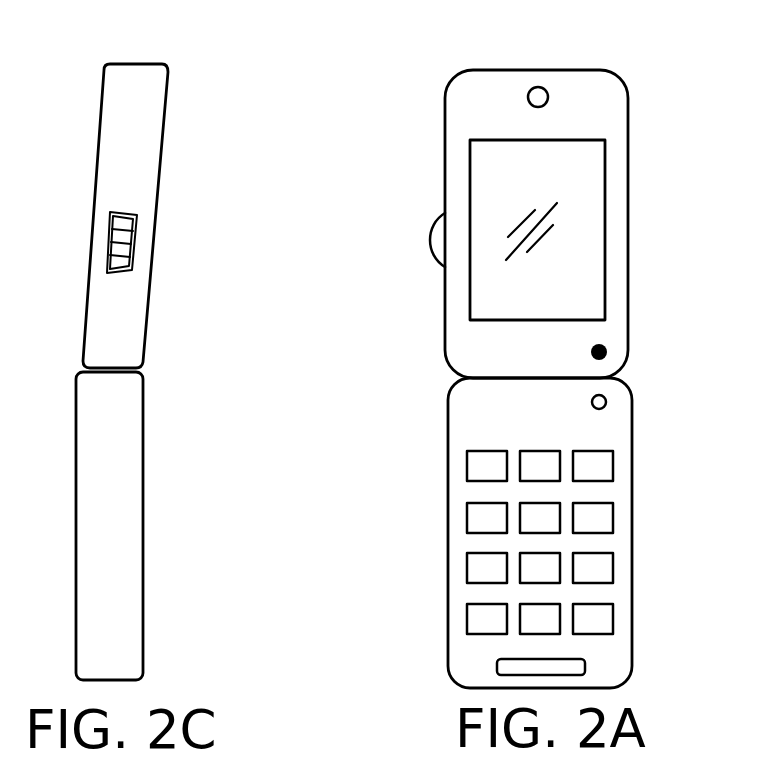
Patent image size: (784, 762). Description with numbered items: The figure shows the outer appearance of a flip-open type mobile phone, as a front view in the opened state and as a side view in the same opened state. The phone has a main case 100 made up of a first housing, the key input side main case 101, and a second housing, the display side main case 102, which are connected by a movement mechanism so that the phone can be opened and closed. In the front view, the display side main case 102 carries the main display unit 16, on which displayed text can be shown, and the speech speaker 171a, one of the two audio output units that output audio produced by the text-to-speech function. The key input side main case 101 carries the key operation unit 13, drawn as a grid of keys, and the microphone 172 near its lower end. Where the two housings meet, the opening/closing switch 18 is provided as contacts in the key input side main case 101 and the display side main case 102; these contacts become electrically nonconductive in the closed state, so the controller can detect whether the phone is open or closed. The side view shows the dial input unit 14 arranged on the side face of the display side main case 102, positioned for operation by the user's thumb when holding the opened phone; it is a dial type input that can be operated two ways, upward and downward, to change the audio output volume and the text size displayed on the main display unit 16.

In FIG. 2A, the main case 100 is at (448, 379).
In FIG. 2A, the key input side main case 101 is at (448, 415).
In FIG. 2A, the display side main case 102 is at (445, 368).
In FIG. 2A, the key operation unit 13 is at (640, 458).
In FIG. 2C, the dial input unit 14 is at (140, 242).
In FIG. 2A, the dial input unit 14 is at (428, 243).
In FIG. 2A, the main display unit 16 is at (623, 225).
In FIG. 2A, the opening/closing switch 18 is at (612, 342).
In FIG. 2A, the speech speaker 171a is at (535, 87).
In FIG. 2A, the microphone 172 is at (497, 665).